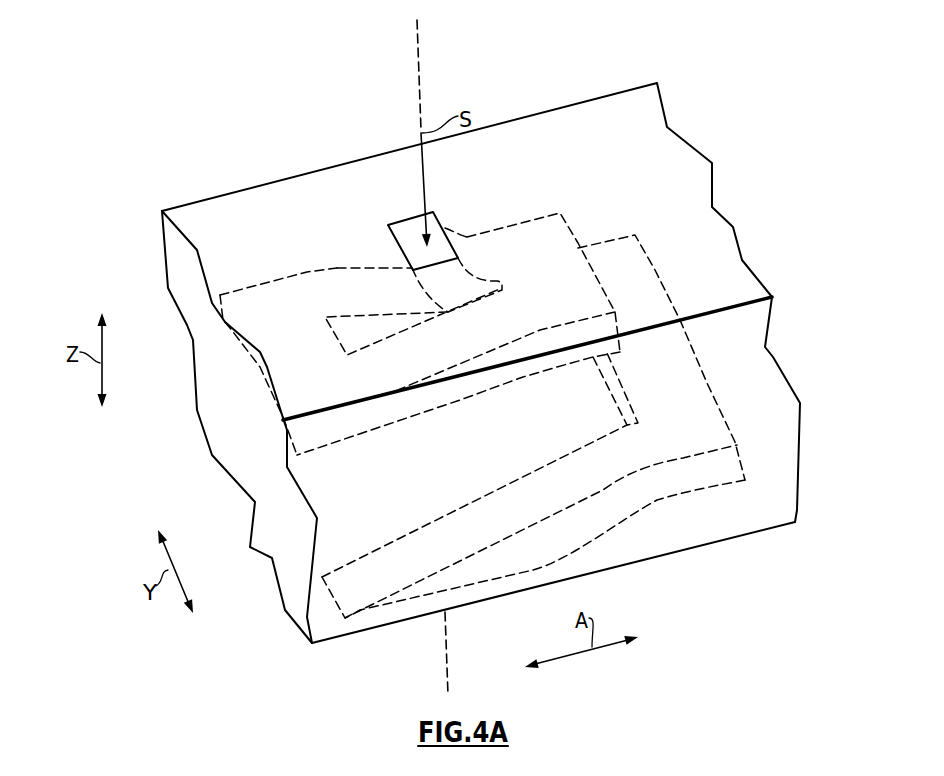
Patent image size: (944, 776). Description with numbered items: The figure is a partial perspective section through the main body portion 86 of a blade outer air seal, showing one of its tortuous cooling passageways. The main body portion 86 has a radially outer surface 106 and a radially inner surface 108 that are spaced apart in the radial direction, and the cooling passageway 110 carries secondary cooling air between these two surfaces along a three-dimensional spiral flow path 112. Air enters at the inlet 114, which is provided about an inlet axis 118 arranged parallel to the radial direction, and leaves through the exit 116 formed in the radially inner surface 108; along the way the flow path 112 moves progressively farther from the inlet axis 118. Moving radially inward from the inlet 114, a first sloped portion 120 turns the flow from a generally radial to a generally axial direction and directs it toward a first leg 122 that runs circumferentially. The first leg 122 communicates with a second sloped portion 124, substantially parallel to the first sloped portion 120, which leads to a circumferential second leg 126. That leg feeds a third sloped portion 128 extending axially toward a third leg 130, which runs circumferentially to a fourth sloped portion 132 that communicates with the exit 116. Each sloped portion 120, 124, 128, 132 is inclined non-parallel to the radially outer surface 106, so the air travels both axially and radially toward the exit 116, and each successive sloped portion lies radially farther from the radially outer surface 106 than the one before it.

The main body portion 86 is at (284, 142).
The radially outer surface 106 is at (542, 162).
The radially inner surface 108 is at (718, 542).
The cooling passageway 110 is at (453, 216).
The three-dimensional spiral flow path 112 is at (556, 294).
The inlet 114 is at (407, 230).
The exit 116 is at (338, 598).
The inlet axis 118 is at (418, 47).
The first sloped portion 120 is at (417, 285).
The first leg 122 is at (575, 235).
The second sloped portion 124 is at (520, 378).
The second leg 126 is at (297, 357).
The third sloped portion 128 is at (367, 268).
The third leg 130 is at (678, 390).
The fourth sloped portion 132 is at (573, 478).